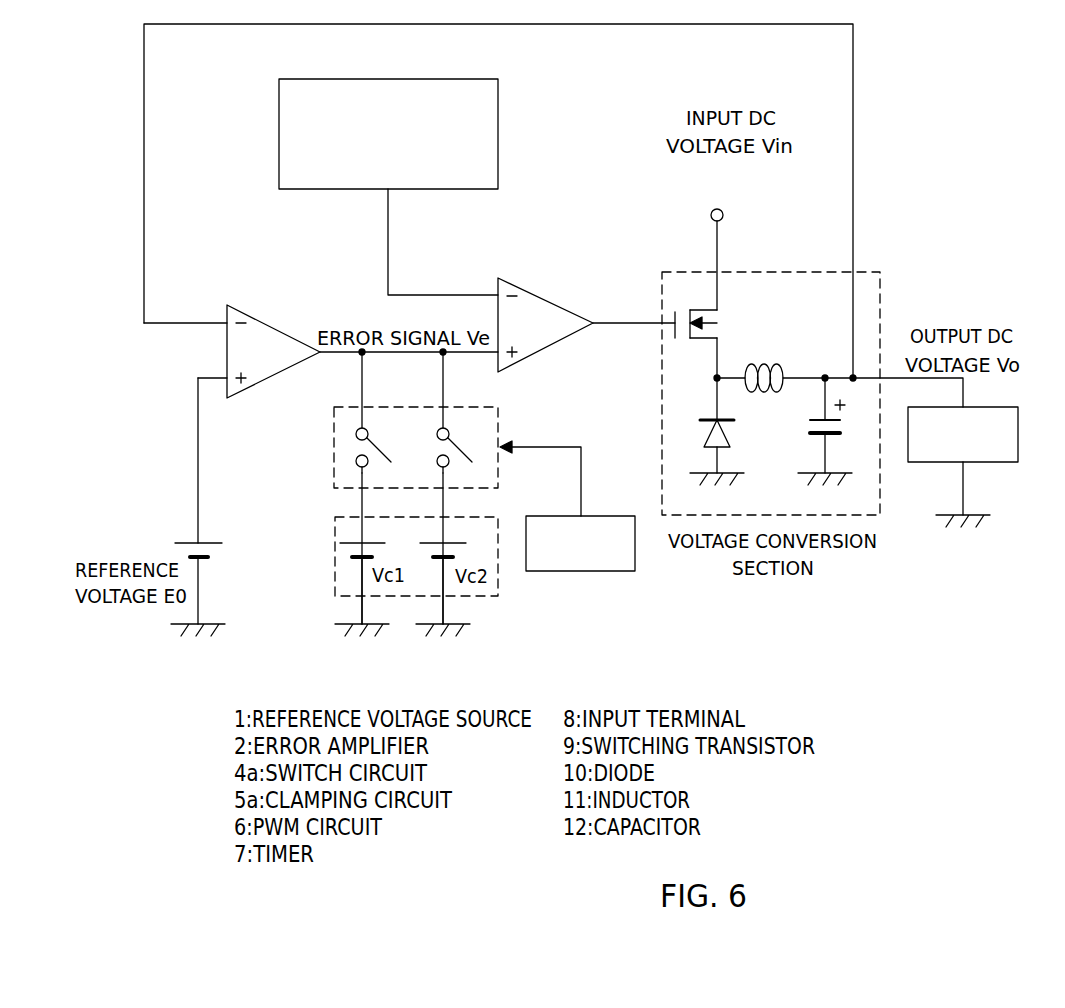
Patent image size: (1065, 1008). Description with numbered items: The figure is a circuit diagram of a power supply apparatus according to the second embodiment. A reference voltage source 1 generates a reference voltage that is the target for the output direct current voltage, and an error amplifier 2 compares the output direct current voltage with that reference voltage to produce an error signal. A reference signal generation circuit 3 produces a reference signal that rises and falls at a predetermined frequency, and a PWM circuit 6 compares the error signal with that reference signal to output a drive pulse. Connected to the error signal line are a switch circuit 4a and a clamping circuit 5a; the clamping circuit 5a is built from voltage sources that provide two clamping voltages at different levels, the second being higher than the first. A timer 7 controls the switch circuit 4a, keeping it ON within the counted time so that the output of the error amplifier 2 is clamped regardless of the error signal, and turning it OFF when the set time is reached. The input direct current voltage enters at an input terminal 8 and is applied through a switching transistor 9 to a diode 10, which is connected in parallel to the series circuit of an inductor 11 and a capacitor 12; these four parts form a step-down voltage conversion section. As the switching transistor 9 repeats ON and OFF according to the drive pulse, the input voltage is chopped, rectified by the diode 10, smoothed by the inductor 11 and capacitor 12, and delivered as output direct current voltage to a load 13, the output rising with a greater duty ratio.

The reference voltage source 1 is at (175, 543).
The error amplifier 2 is at (268, 324).
The reference signal generation circuit 3 is at (418, 79).
The switch circuit 4a is at (334, 450).
The clamping circuit 5a is at (335, 558).
The PWM circuit 6 is at (553, 301).
The timer 7 is at (612, 516).
The input direct current voltage input terminal 8 is at (721, 209).
The switching transistor 9 is at (720, 319).
The diode 10 is at (724, 424).
The inductor 11 is at (781, 371).
The capacitor 12 is at (812, 436).
The load 13 is at (996, 407).